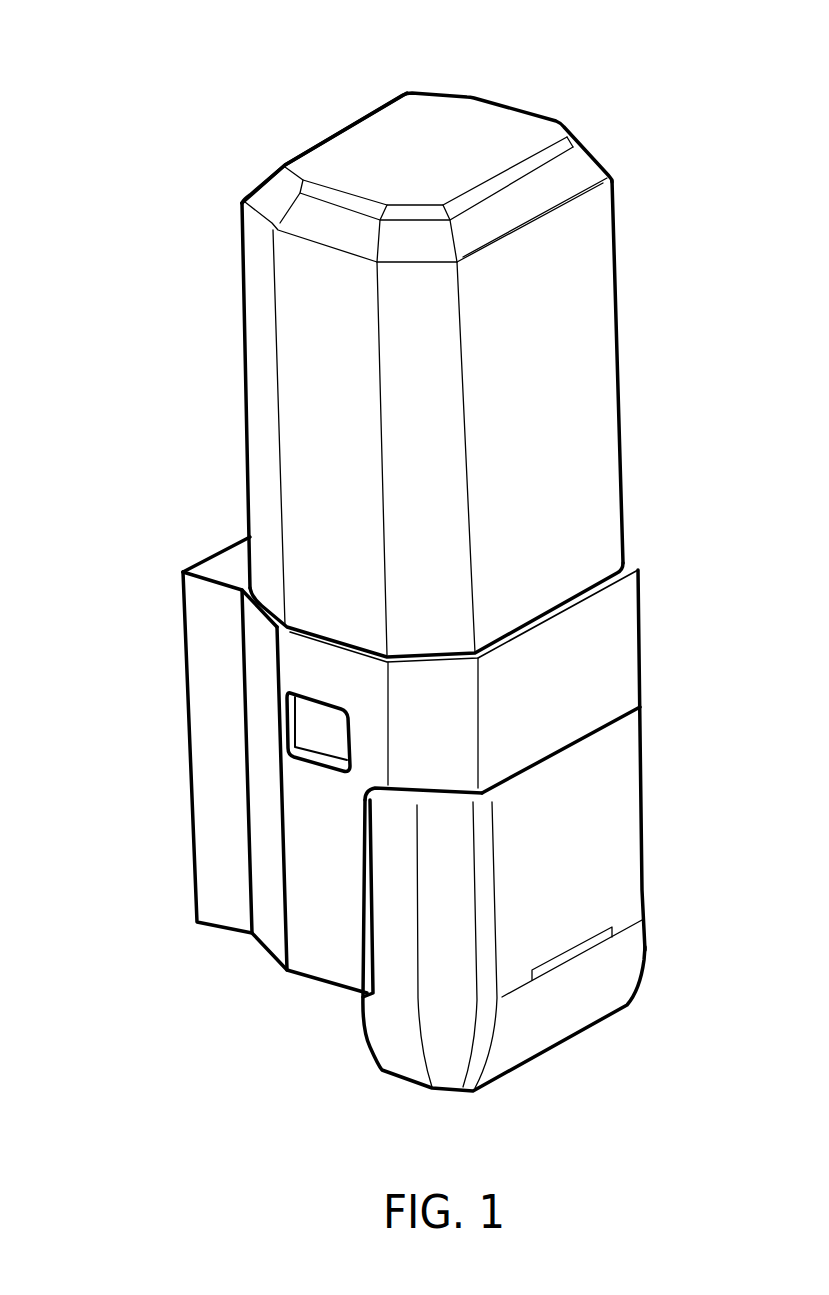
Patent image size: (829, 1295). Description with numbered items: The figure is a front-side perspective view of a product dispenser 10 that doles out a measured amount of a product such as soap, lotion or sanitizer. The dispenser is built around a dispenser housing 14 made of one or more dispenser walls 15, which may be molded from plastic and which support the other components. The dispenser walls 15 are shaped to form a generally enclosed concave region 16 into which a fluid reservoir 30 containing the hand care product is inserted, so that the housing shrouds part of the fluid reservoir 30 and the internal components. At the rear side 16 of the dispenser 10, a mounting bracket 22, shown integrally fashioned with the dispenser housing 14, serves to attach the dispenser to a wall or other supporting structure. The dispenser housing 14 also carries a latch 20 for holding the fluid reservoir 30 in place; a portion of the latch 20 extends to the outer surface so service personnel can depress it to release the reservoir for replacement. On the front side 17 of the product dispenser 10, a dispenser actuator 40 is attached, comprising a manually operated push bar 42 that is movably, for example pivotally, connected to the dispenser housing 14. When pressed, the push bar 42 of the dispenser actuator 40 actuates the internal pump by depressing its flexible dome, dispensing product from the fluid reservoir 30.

The product dispenser 10 is at (712, 90).
The dispenser housing 14 is at (623, 648).
The dispenser walls 15 is at (625, 605).
The rear side 16 is at (180, 428).
The front side 17 is at (683, 737).
The latch 20 is at (318, 728).
The mounting bracket 22 is at (212, 910).
The fluid reservoir 30 is at (490, 122).
The dispenser actuator 40 is at (612, 878).
The push bar 42 is at (618, 822).